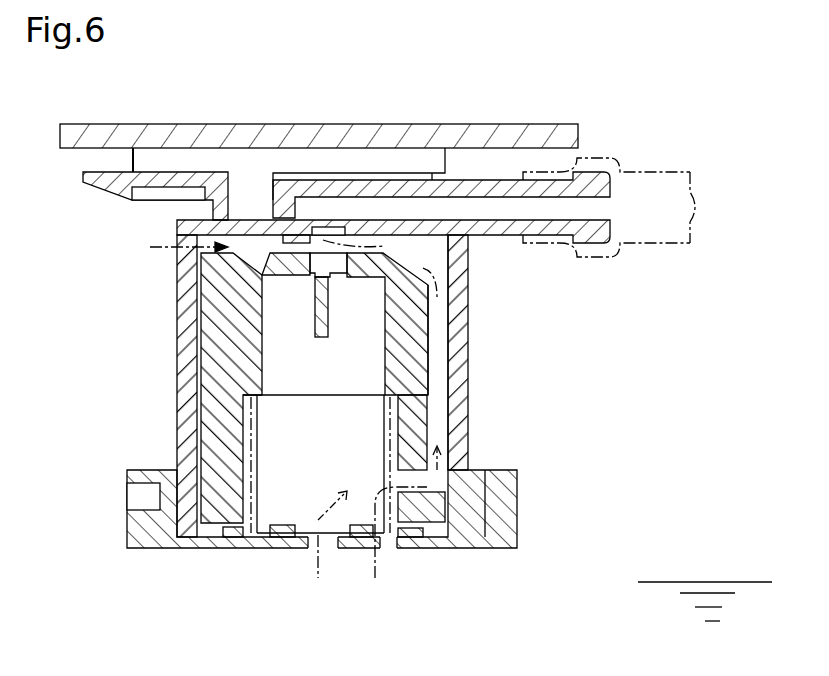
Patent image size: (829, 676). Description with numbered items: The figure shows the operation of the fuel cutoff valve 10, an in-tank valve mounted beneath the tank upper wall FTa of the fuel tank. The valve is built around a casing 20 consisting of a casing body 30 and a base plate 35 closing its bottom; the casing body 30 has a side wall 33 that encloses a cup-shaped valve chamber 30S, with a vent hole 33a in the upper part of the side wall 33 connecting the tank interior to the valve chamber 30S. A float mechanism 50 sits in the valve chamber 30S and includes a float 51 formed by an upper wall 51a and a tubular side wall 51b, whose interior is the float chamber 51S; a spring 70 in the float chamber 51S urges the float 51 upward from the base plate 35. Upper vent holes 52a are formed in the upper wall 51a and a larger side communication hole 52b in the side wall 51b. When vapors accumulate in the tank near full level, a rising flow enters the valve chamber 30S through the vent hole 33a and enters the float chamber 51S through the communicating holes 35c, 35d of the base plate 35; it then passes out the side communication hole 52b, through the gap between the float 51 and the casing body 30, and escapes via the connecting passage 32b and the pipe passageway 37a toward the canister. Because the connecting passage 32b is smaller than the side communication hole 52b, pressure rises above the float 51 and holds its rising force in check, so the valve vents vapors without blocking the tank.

The fuel cutoff valve 10 is at (663, 126).
The casing 20 is at (62, 342).
The casing body 30 is at (305, 379).
The valve chamber 30S is at (437, 313).
The side wall 33 is at (177, 292).
The vent hole 33a is at (185, 239).
The base plate 35 is at (292, 511).
The central communicating hole 35c is at (322, 540).
The communicating hole 35d is at (387, 540).
The pipe passageway 37a is at (463, 207).
The connecting passage 32b is at (328, 224).
The float mechanism 50 is at (350, 303).
The float 51 is at (350, 303).
The float chamber 51S is at (292, 350).
The upper wall 51a is at (287, 248).
The side wall 51b is at (430, 395).
The upper vent holes 52a is at (263, 262).
The side communication hole 52b is at (437, 480).
The spring 70 is at (400, 440).
The tank upper wall FTa is at (493, 130).